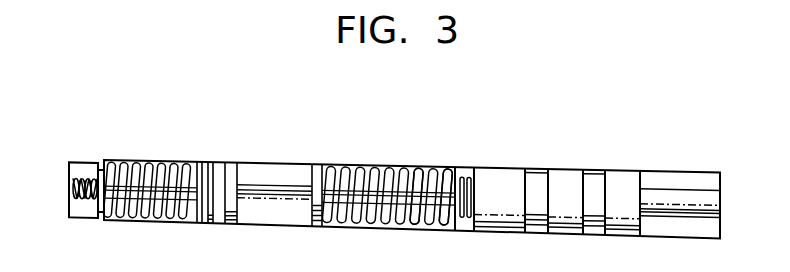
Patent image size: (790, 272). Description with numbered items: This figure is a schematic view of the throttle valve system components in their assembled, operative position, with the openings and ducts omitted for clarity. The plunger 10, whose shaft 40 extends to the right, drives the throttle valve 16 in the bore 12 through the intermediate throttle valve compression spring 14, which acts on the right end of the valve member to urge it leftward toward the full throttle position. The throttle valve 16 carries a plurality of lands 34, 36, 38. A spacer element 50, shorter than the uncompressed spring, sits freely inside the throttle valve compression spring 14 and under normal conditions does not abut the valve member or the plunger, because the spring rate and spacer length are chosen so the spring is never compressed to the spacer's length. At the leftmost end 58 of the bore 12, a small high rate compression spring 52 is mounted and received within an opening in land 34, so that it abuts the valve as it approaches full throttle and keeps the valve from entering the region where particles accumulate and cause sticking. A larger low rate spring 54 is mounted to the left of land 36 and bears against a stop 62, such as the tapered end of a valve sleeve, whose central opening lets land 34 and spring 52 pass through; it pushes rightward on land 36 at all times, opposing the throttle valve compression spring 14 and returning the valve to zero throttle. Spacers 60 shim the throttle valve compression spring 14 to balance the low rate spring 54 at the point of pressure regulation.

The plunger 10 is at (621, 237).
The bore 12 is at (413, 167).
The throttle valve compression spring 14 is at (441, 222).
The throttle valve 16 is at (284, 207).
The land 34 is at (146, 170).
The land 36 is at (228, 165).
The land 38 is at (313, 165).
The shaft 40 is at (714, 220).
The spacer element 50 is at (419, 218).
The high rate compression spring 52 is at (79, 175).
The low rate spring 54 is at (193, 218).
The leftmost end of the bore 58 is at (71, 190).
The spacers 60 is at (462, 177).
The stop 62 is at (98, 217).